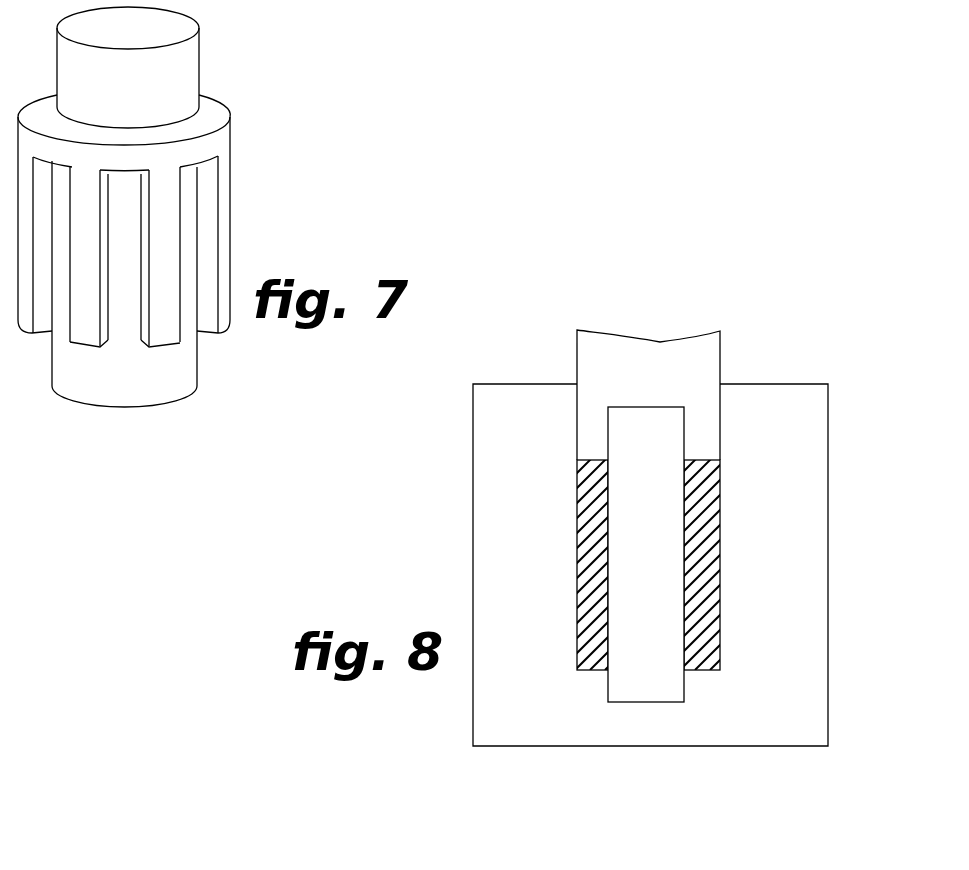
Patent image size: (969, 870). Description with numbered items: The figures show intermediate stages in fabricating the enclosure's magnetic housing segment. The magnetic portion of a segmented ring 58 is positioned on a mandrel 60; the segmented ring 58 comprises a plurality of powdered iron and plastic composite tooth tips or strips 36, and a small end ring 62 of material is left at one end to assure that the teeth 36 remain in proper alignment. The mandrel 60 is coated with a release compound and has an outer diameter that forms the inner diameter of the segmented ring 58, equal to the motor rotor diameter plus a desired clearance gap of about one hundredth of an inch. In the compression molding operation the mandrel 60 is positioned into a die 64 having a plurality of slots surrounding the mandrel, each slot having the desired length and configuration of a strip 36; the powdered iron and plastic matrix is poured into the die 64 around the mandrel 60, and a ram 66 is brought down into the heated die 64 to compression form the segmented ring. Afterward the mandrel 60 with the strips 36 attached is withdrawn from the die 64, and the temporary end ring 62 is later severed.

In FIG. 7, the tooth tips or strips 36 is at (225, 267).
In FIG. 8, the tooth tips or strips 36 is at (590, 560).
In FIG. 7, the segmented ring 58 is at (243, 200).
In FIG. 7, the mandrel 60 is at (145, 30).
In FIG. 8, the mandrel 60 is at (660, 530).
In FIG. 7, the end ring 62 is at (214, 144).
In FIG. 8, the end ring 62 is at (580, 475).
In FIG. 8, the die 64 is at (743, 418).
In FIG. 8, the ram 66 is at (672, 358).